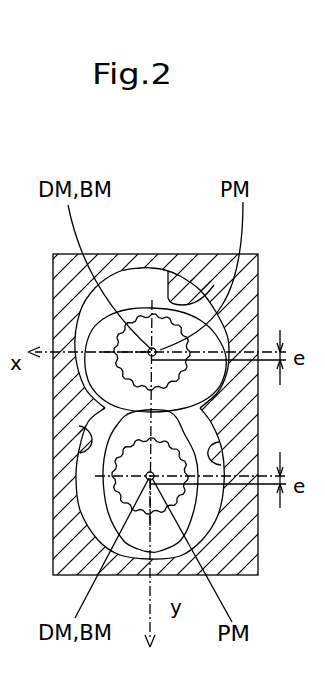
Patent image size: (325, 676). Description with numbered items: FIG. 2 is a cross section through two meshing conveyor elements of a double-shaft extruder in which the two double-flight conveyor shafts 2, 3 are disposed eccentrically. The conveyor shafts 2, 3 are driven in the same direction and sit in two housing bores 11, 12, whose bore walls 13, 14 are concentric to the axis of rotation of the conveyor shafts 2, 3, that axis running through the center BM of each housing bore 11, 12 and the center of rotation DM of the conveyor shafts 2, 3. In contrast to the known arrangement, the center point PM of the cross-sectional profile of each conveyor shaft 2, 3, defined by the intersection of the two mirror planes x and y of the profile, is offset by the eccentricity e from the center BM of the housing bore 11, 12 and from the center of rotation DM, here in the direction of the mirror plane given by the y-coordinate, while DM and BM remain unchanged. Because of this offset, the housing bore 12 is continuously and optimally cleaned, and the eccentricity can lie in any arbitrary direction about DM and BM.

The conveyor shaft 2 is at (170, 350).
The conveyor shaft 3 is at (153, 478).
The housing bore 11 is at (105, 310).
The housing bore 12 is at (226, 433).
The bore wall 13 is at (170, 275).
The bore wall 14 is at (85, 427).